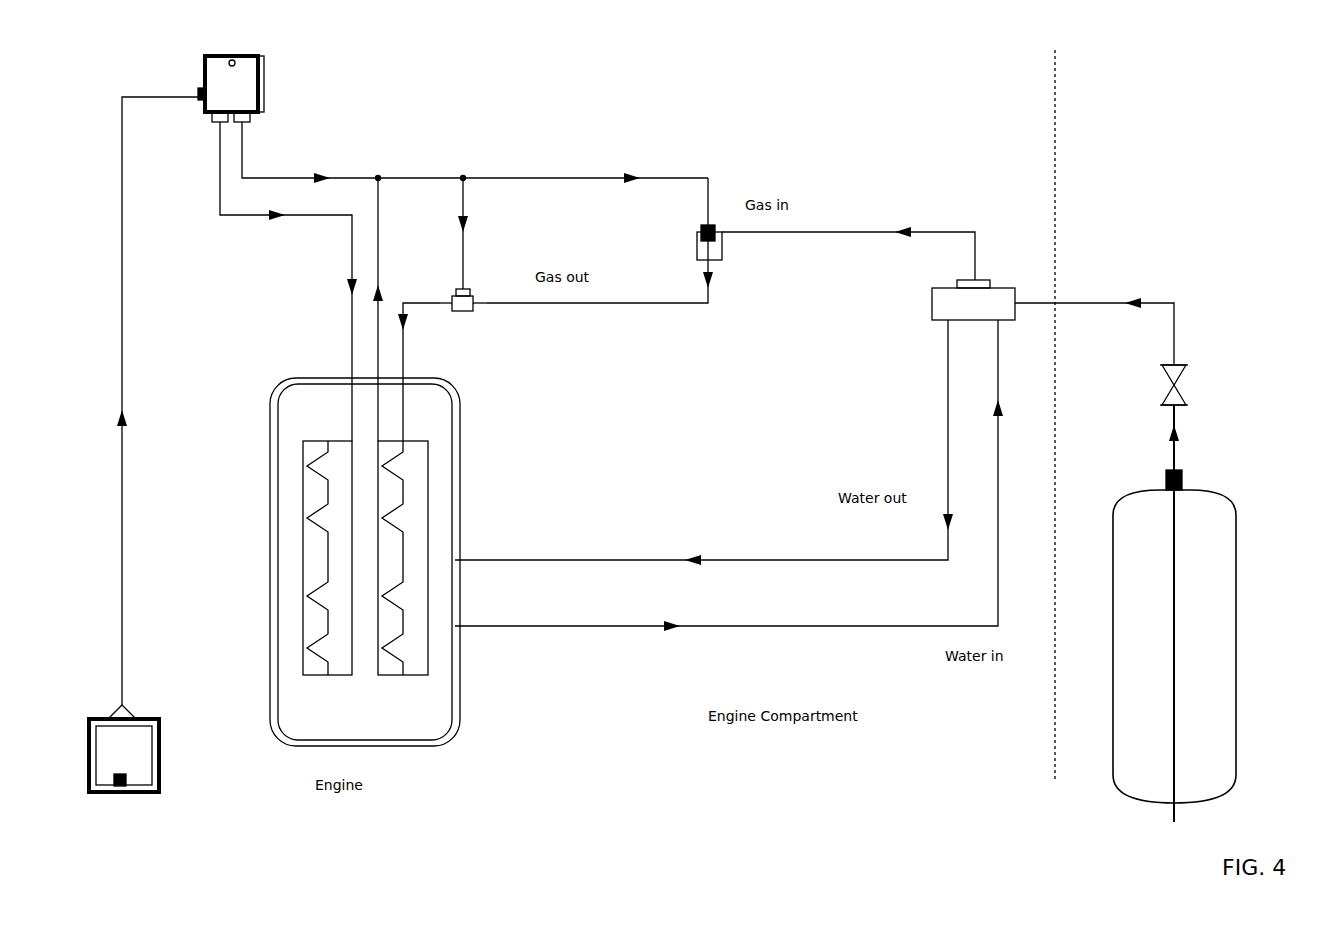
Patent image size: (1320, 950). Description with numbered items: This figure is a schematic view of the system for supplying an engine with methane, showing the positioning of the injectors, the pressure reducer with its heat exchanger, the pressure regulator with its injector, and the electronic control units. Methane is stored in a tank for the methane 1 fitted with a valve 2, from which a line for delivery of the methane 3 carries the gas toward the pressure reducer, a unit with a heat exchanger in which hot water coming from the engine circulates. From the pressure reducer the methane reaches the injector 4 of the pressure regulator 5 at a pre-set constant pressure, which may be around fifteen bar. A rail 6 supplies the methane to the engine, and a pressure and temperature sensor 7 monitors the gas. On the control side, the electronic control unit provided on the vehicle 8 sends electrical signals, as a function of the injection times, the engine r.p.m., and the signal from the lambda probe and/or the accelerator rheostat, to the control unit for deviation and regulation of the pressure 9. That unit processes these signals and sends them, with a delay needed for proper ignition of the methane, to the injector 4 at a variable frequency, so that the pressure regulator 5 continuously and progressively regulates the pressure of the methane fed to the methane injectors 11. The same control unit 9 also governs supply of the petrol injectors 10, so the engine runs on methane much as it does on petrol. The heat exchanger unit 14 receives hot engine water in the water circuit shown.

The tank for the methane 1 is at (1216, 628).
The valve 2 is at (1236, 367).
The line for delivery of the methane 3 is at (1168, 297).
The injector 4 is at (851, 164).
The pressure regulator 5 is at (688, 293).
The rail for supply of the methane to the engine 6 is at (406, 548).
The pressure and temperature sensor 7 is at (598, 190).
The electronic control unit provided on the vehicle 8 is at (224, 783).
The control unit for deviation and regulation of the pressure 9 is at (412, 380).
The petrol injectors 10 is at (244, 513).
The methane injectors 11 is at (488, 513).
The heat exchanger 14 is at (871, 349).